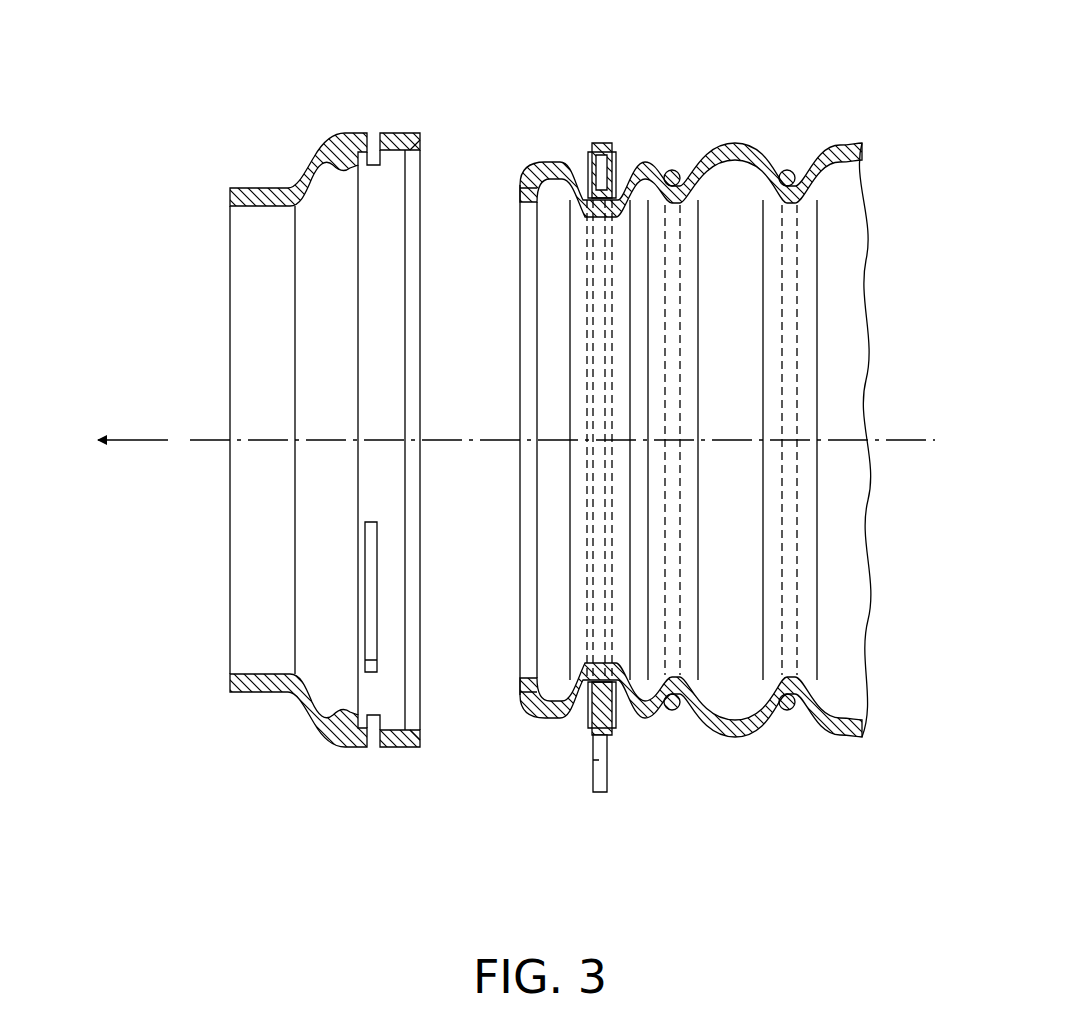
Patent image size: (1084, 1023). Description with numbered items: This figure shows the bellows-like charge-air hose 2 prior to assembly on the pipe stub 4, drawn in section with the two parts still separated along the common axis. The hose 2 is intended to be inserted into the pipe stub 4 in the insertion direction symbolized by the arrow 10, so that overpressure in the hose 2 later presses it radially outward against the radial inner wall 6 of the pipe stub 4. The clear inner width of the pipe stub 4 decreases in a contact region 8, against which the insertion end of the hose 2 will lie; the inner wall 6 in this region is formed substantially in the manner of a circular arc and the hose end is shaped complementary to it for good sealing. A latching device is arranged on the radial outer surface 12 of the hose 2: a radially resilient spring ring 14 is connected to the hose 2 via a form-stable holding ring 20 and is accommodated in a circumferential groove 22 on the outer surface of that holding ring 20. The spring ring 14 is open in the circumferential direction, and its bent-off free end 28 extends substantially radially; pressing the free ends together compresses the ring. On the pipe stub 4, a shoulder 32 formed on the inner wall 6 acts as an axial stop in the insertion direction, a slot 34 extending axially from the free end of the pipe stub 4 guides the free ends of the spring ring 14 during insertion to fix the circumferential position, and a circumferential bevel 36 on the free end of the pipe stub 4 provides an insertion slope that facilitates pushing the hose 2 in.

The hose 2 is at (687, 432).
The pipe stub 4 is at (292, 437).
The radial inner wall 6 is at (310, 742).
The contact region 8 is at (315, 160).
The arrow 10 is at (133, 447).
The radial outer surface 12 is at (738, 737).
The spring ring 14 is at (600, 150).
The holding ring 20 is at (565, 170).
The circumferential groove 22 is at (552, 730).
The free end 28 is at (600, 775).
The shoulder 32 is at (372, 135).
The slot 34 is at (393, 745).
The circumferential bevel 36 is at (400, 381).